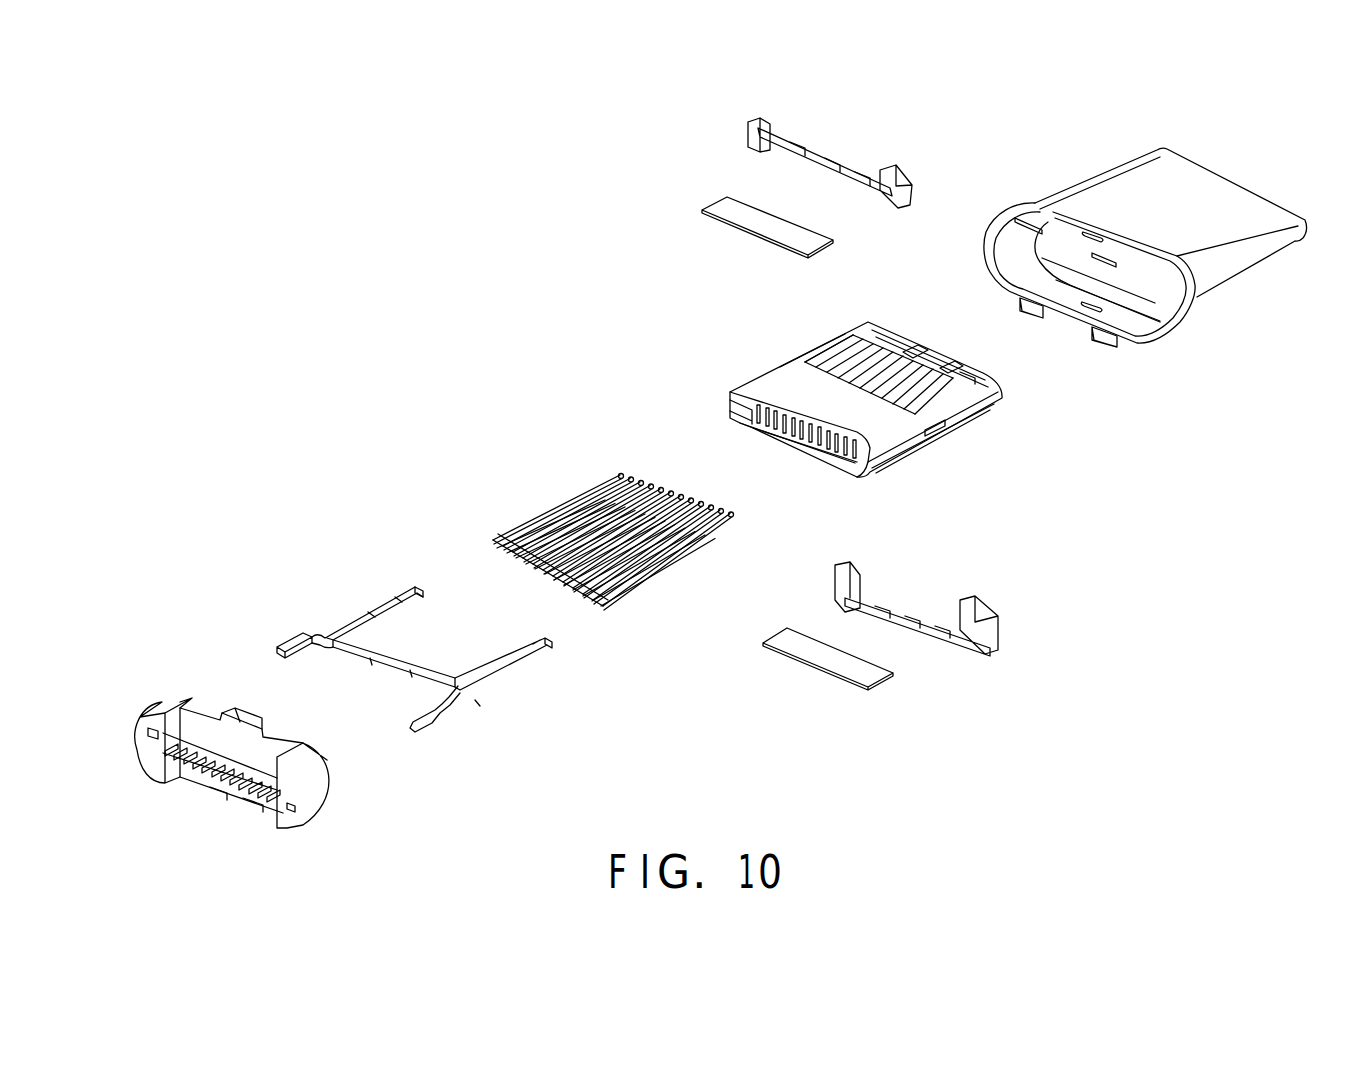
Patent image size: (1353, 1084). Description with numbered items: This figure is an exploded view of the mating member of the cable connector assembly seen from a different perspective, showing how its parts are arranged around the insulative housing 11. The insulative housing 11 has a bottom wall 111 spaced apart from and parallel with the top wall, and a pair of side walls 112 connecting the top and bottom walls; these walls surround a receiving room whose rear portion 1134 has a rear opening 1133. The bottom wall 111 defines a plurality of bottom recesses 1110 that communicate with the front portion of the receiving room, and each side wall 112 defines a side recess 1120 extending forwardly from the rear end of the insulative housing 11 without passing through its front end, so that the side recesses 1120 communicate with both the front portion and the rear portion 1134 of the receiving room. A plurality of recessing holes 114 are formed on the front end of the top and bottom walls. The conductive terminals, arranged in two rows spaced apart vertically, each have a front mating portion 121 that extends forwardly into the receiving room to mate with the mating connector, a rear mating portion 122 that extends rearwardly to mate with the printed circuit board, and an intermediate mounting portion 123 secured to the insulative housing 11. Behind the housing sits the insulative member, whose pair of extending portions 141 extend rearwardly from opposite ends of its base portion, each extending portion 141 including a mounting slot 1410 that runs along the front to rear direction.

The insulative housing 11 is at (767, 385).
The bottom wall 111 is at (810, 392).
The bottom recesses 1110 is at (812, 362).
The side walls 112 is at (980, 405).
The side recess 1120 is at (937, 427).
The recessing holes 114 is at (915, 353).
The rear opening 1133 is at (738, 433).
The rear portion 1134 is at (840, 452).
The front mating portion 121 is at (713, 543).
The rear mating portion 122 is at (613, 600).
The intermediate mounting portion 123 is at (665, 583).
The extending portions 141 is at (172, 720).
The mounting slot 1410 is at (175, 760).